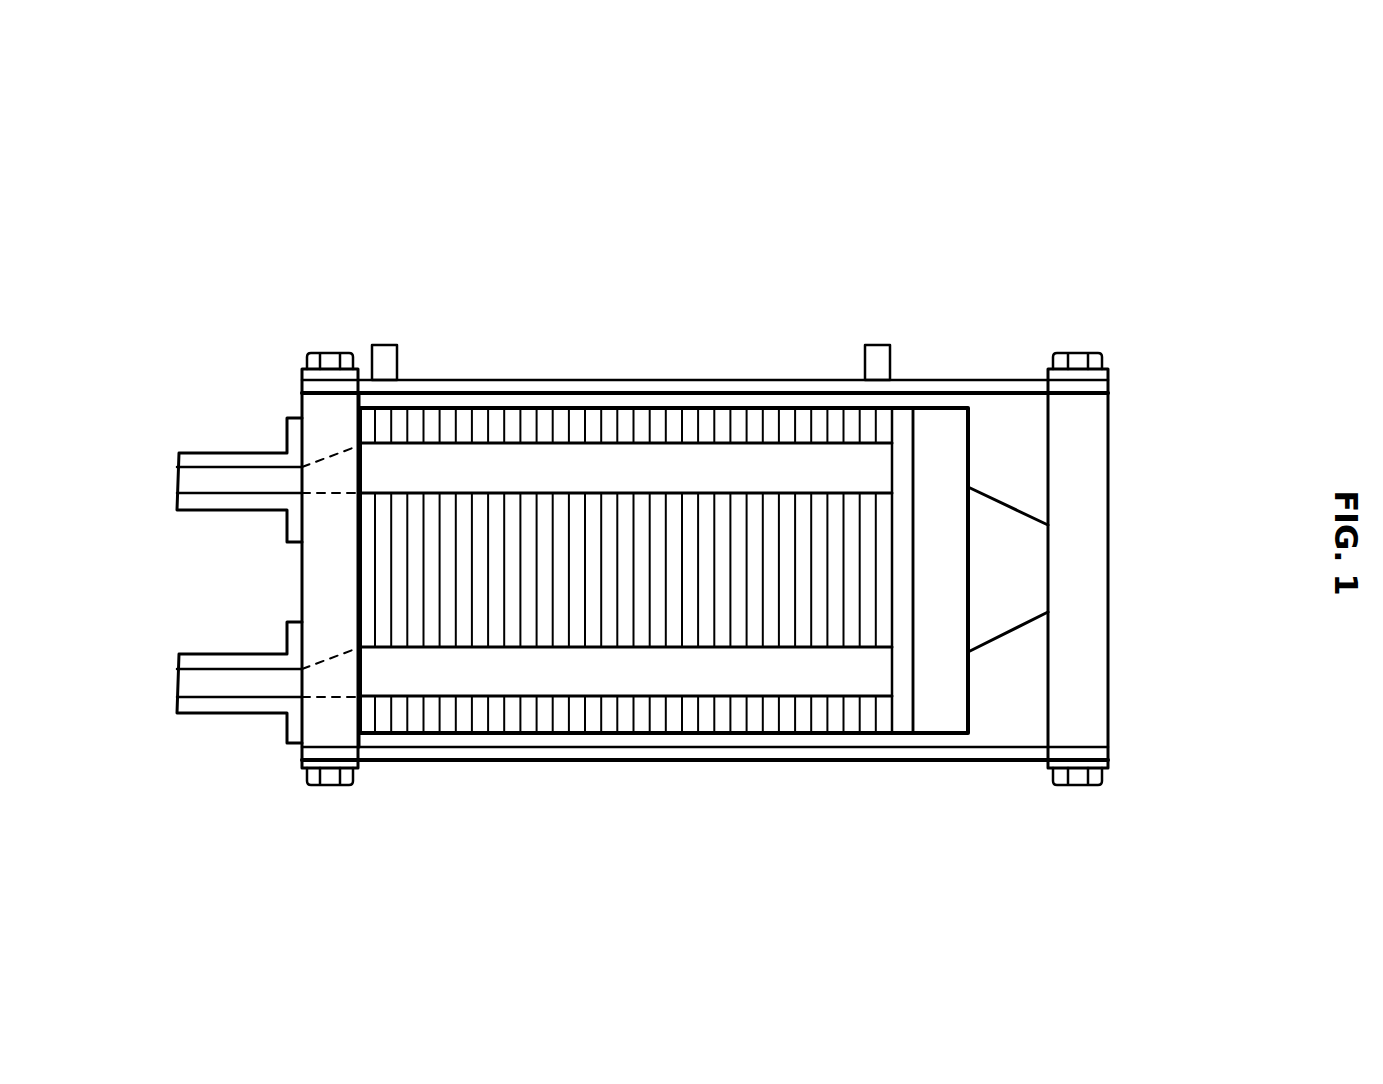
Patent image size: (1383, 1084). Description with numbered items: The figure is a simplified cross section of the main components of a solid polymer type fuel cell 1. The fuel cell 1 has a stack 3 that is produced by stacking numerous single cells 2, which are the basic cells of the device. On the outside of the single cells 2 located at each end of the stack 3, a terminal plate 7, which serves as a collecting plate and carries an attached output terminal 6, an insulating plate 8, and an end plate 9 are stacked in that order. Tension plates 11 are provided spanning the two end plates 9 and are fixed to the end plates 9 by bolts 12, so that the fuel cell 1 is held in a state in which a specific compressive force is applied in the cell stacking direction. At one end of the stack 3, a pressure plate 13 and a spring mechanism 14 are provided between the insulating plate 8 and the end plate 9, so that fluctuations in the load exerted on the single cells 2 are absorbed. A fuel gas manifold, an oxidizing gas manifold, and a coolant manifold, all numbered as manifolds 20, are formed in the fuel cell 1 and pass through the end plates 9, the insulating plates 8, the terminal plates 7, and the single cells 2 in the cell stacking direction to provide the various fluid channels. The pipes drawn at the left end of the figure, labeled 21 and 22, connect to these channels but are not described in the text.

The fuel cell 1 is at (818, 186).
The single cell 2 is at (560, 412).
The stack 3 is at (858, 263).
The output terminal 6 is at (388, 352).
The terminal plate 7 is at (380, 720).
The insulating plate 8 is at (367, 723).
The end plate 9 is at (315, 717).
The tension plate 11 is at (993, 385).
The bolt 12 is at (325, 365).
The pressure plate 13 is at (948, 457).
The spring mechanism 14 is at (1022, 578).
The manifold 20 is at (776, 468).
The fluid supply pipe 21 is at (205, 473).
The fluid discharge pipe 22 is at (212, 680).